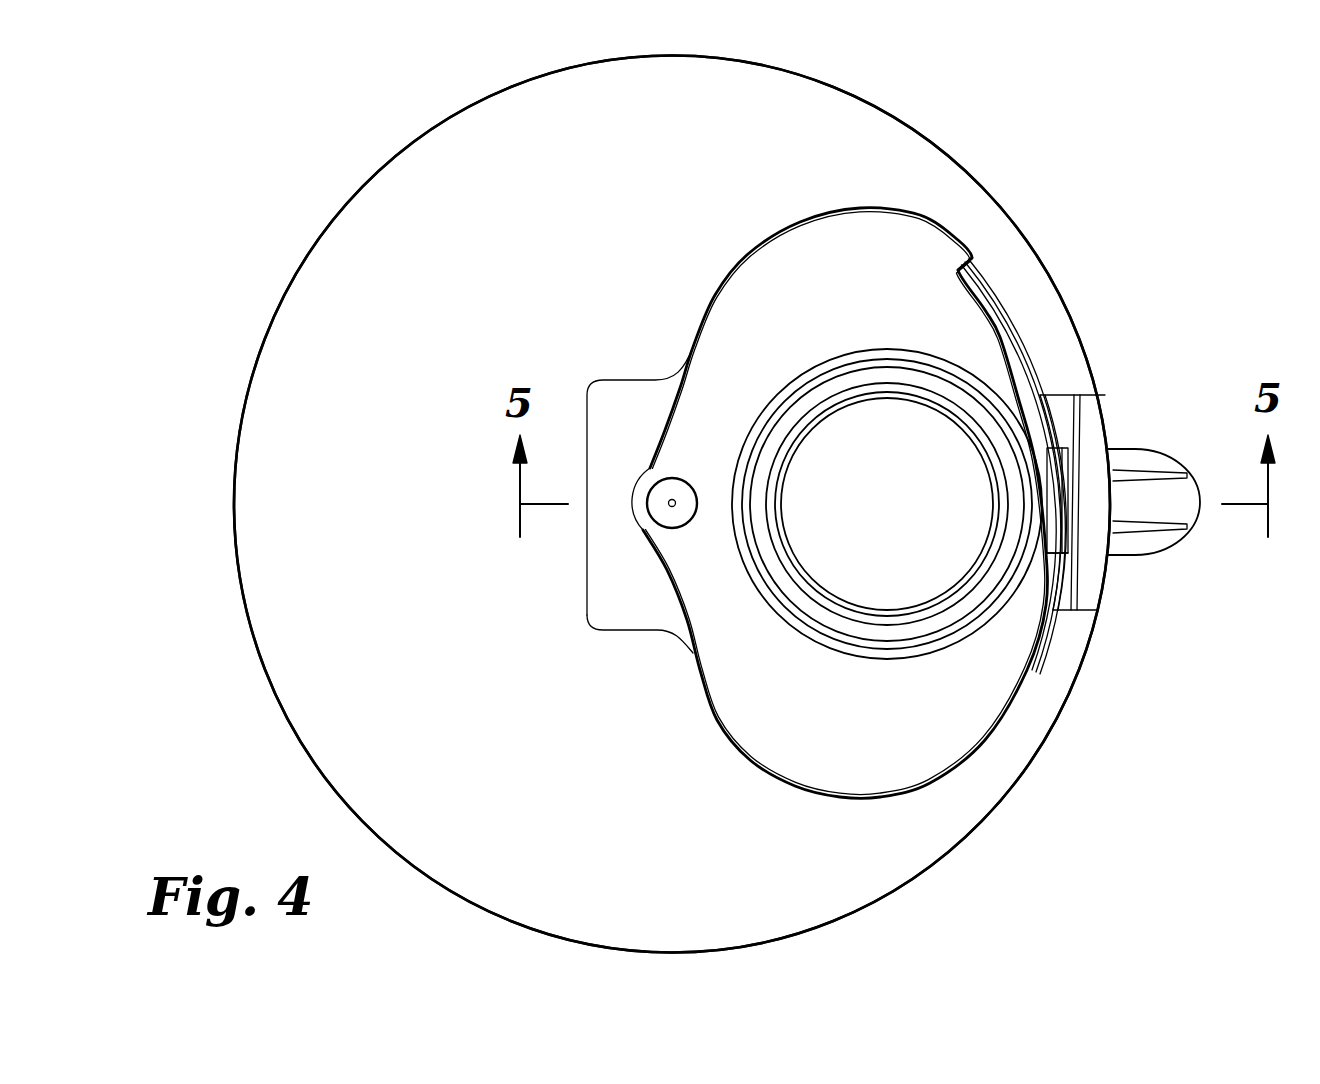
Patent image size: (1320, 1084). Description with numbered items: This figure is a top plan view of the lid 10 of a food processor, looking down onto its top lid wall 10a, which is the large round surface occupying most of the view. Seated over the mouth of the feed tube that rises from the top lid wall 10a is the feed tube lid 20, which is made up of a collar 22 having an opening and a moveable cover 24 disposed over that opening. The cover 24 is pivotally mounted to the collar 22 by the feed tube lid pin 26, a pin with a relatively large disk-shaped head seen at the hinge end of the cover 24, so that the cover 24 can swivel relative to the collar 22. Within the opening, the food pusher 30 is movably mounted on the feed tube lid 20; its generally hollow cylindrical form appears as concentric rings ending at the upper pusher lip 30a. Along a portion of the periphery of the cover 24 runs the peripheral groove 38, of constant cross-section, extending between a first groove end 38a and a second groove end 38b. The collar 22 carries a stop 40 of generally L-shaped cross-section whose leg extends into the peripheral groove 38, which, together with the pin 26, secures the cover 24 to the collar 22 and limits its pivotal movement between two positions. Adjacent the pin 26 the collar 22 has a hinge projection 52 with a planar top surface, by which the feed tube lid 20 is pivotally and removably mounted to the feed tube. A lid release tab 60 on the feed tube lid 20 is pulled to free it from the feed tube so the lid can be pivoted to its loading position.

The lid 10 is at (338, 160).
The top lid wall 10a is at (300, 360).
The feed tube lid 20 is at (1015, 745).
The collar 22 is at (953, 785).
The cover 24 is at (888, 247).
The feed tube lid pin 26 is at (668, 517).
The food pusher 30 is at (927, 577).
The upper pusher lip 30a is at (1007, 590).
The peripheral groove 38 is at (1022, 335).
The first groove end 38a is at (1062, 548).
The second groove end 38b is at (973, 268).
The stop 40 is at (1060, 478).
The hinge projection 52 is at (550, 570).
The lid release tab 60 is at (1085, 413).